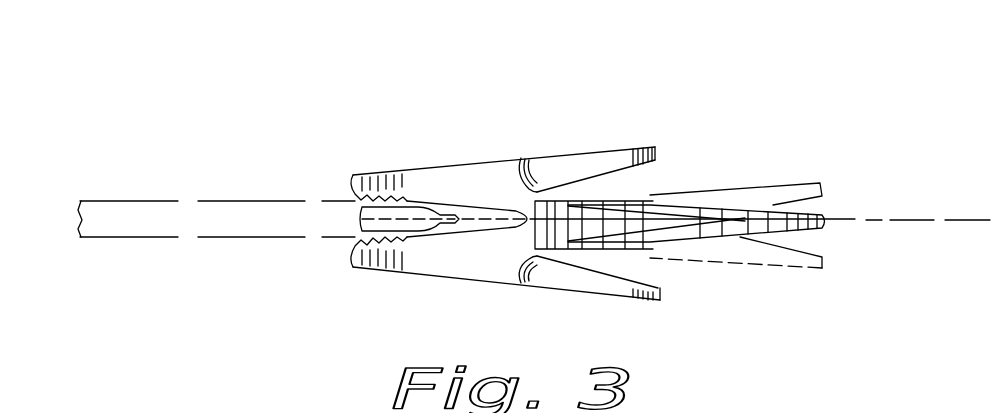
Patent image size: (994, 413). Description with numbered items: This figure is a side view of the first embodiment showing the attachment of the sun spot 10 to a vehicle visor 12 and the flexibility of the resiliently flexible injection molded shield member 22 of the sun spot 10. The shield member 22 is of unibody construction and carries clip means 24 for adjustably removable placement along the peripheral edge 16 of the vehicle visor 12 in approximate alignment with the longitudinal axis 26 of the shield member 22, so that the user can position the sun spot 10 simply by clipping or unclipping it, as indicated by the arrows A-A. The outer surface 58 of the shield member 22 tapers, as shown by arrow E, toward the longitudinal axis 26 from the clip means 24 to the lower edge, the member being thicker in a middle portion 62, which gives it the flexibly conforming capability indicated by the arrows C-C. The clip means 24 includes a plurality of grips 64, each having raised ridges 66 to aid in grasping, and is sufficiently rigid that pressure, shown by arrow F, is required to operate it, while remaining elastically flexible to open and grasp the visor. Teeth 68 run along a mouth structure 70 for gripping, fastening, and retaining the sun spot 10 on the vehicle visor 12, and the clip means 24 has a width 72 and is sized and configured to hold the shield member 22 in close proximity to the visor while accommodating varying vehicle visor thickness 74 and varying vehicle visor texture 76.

The sun spot 10 is at (732, 125).
The vehicle visor 12 is at (164, 180).
The peripheral edge 16 is at (438, 195).
The resiliently flexible injection molded shield member 22 is at (685, 199).
The clip means 24 is at (499, 150).
The longitudinal axis 26 is at (915, 193).
The outer surface 58 is at (653, 201).
The middle portion 62 is at (693, 212).
The grips 64 is at (558, 157).
The raised ridges 66 is at (641, 147).
The teeth 68 is at (357, 178).
The mouth structure 70 is at (447, 233).
The width 72 is at (482, 272).
The vehicle visor thickness 74 is at (225, 178).
The vehicle visor texture 76 is at (268, 201).
The arrows A- A is at (591, 130).
The arrows C- C is at (847, 184).
The arrow E is at (650, 262).
The arrow F is at (602, 69).